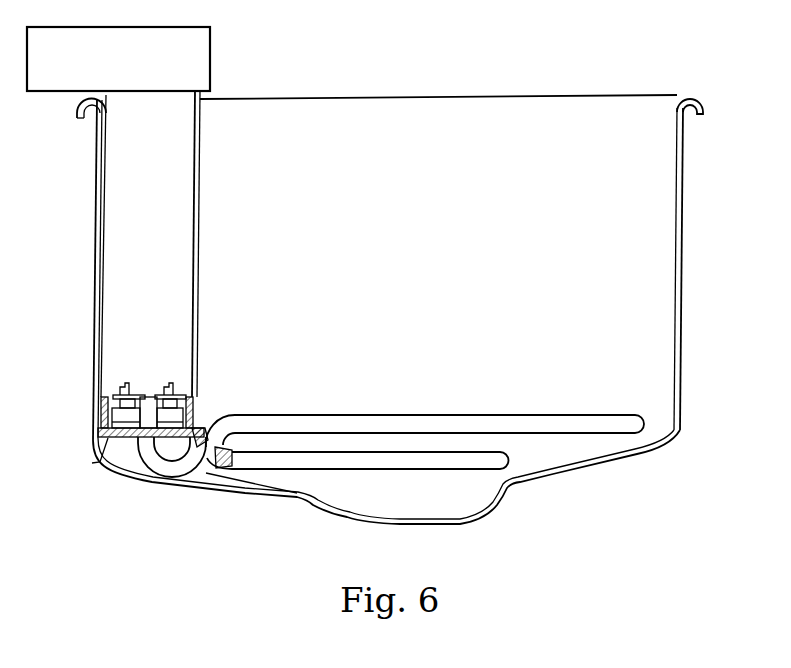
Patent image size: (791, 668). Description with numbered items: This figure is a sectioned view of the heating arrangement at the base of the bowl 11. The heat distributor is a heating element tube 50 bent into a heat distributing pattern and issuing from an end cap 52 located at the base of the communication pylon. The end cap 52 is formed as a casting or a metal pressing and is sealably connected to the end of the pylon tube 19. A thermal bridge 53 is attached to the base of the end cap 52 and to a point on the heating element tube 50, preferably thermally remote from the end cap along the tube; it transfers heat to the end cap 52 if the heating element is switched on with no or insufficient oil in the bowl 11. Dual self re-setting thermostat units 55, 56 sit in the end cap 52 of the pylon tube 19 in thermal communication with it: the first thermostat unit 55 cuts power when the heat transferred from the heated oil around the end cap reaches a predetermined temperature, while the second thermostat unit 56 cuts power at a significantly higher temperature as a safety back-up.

The bowl 11 is at (677, 217).
The pylon tube 19 is at (195, 292).
The heating element tube 50 is at (472, 415).
The end cap 52 is at (95, 463).
The thermal bridge 53 is at (200, 430).
The first self re-setting thermostat unit 55 is at (125, 386).
The second self re-setting thermostat unit 56 is at (169, 386).